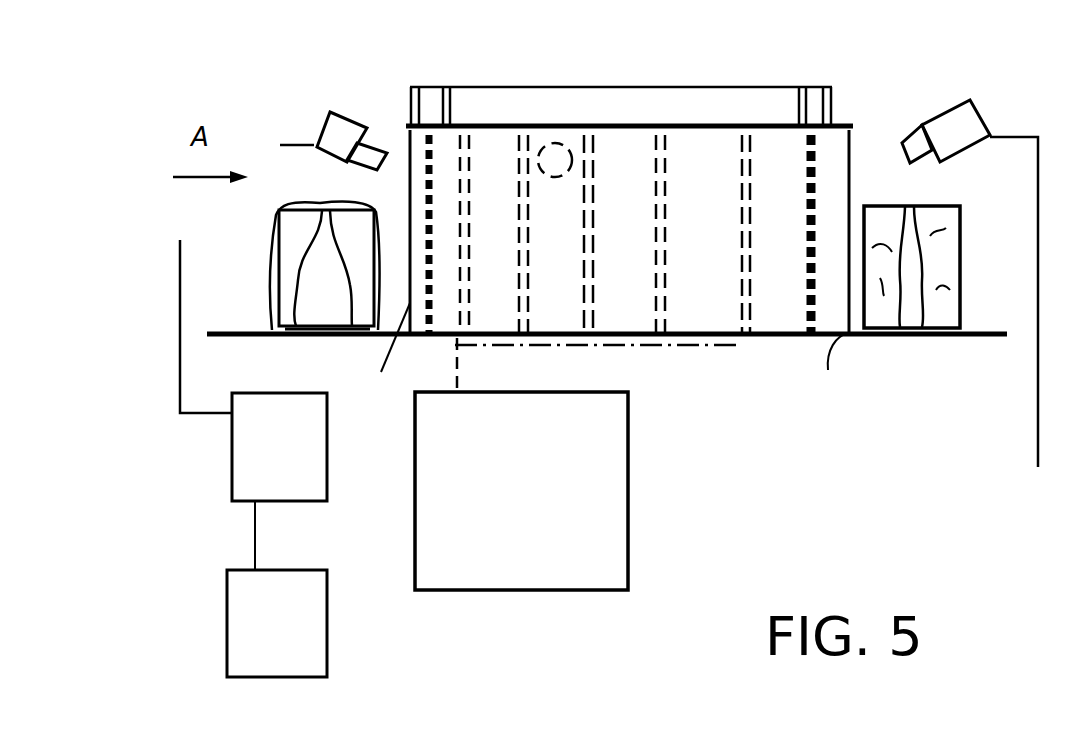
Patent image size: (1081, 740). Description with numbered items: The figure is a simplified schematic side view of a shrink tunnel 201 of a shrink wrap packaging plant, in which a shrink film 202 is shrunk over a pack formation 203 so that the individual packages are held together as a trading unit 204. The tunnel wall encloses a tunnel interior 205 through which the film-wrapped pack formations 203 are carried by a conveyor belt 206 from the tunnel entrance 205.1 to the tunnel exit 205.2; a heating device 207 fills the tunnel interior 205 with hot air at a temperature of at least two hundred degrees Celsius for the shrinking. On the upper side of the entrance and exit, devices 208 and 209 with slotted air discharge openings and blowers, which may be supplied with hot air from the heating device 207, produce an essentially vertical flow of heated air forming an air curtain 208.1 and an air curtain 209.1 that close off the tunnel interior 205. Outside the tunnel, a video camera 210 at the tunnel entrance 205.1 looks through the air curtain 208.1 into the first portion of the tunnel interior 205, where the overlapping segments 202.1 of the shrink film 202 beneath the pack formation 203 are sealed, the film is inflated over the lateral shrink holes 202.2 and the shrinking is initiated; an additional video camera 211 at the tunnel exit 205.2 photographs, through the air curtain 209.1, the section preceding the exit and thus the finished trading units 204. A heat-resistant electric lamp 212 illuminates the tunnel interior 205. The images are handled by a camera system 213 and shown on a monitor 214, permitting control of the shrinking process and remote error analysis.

The shrink tunnel 201 is at (633, 111).
The shrink film 202 is at (334, 208).
The overlapping segments of the shrink film 202.1 is at (342, 340).
The lateral shrink holes 202.2 is at (293, 287).
The pack formation 203 is at (290, 238).
The trading unit 204 is at (968, 199).
The tunnel interior 205 is at (722, 217).
The tunnel entrance 205.1 is at (376, 359).
The tunnel exit 205.2 is at (841, 368).
The conveyor belt 206 is at (235, 340).
The heating device 207 is at (522, 518).
The air curtain device at tunnel entrance 208 is at (430, 114).
The air curtain at tunnel entrance 208.1 is at (433, 167).
The air curtain device at tunnel exit 209 is at (833, 101).
The air curtain at tunnel exit 209.1 is at (803, 195).
The video camera 210 is at (340, 130).
The additional video camera 211 is at (967, 125).
The heat-resistant electric lamp 212 is at (573, 158).
The camera system 213 is at (298, 467).
The monitor 214 is at (298, 637).